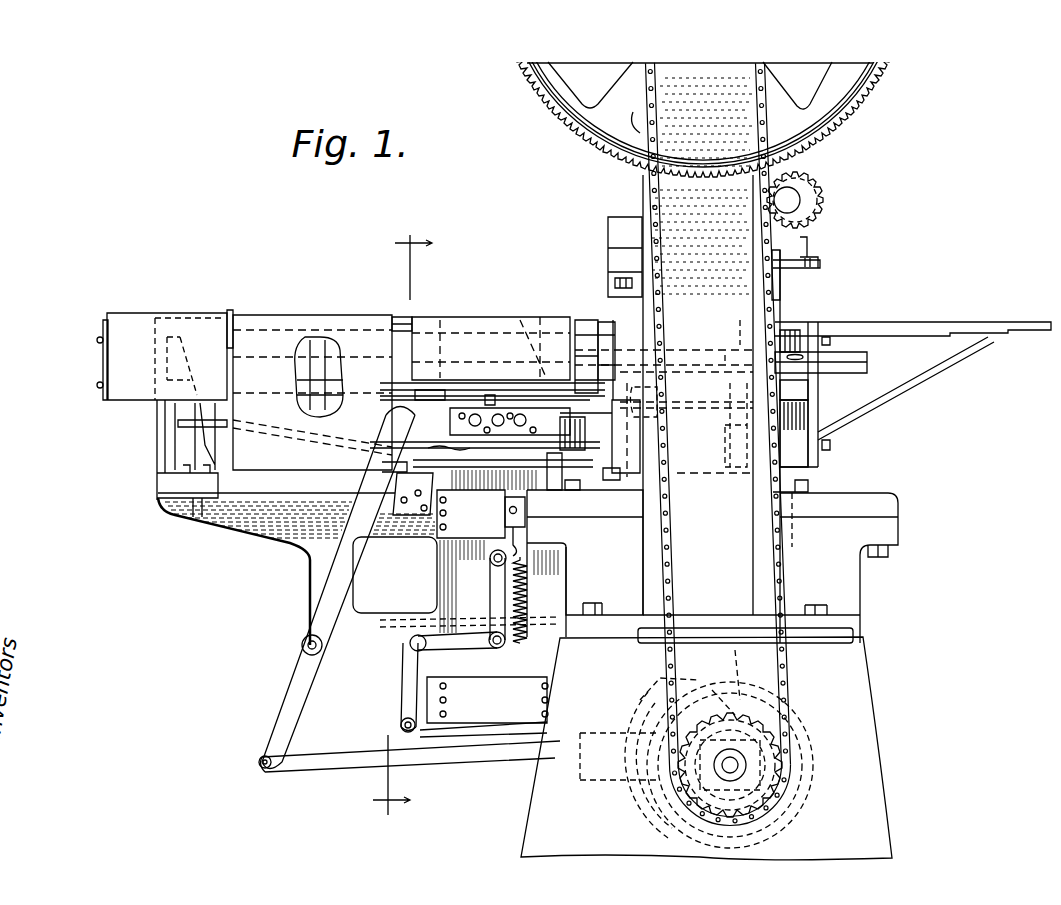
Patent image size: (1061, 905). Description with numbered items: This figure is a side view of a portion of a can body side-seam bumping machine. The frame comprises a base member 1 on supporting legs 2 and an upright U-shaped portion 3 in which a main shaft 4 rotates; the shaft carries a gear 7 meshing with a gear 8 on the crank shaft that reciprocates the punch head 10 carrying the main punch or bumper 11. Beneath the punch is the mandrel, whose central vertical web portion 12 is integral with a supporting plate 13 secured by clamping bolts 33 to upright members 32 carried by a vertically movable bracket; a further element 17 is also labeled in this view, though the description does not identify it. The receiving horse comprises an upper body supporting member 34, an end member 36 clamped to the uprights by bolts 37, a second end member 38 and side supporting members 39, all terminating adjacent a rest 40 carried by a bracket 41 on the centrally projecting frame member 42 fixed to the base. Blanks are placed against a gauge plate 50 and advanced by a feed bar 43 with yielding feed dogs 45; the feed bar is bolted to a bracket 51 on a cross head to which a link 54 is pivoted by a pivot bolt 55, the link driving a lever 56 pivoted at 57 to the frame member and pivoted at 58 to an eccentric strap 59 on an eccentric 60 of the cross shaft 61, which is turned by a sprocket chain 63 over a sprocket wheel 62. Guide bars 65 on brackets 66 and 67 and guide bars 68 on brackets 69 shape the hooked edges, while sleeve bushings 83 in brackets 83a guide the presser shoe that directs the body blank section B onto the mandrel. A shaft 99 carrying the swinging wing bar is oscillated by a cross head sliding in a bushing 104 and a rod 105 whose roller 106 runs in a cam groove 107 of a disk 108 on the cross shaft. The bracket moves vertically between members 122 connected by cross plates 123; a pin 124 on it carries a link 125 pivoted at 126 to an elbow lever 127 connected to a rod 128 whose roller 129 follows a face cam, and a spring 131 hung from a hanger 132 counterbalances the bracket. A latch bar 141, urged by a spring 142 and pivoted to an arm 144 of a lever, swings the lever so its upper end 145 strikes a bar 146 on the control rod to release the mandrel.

The base member 1 is at (845, 583).
The supporting legs 2 is at (636, 738).
The upright U-shaped portion 3 is at (541, 524).
The main shaft 4 is at (790, 200).
The gear 7 is at (808, 187).
The gear 8 is at (703, 107).
The punch head 10 is at (608, 235).
The main punch or bumper 11 is at (615, 286).
The central vertical web portion 12 is at (800, 422).
The supporting plate 13 is at (626, 396).
The shaft 17 is at (800, 395).
The upright members 32 is at (608, 325).
The clamping bolts 33 is at (512, 418).
The upper body supporting member 34 is at (398, 318).
The end member 36 is at (590, 322).
The bolts 37 is at (575, 433).
The second end member 38 is at (310, 373).
The supporting members 39 is at (427, 392).
The rest 40 is at (107, 352).
The bracket 41 is at (172, 440).
The centrally projecting frame member 42 is at (270, 522).
The feed bar 43 is at (830, 357).
The feed dogs 45 is at (805, 360).
The gauge plate 50 is at (229, 311).
The bracket 51 is at (540, 320).
The link 54 is at (470, 318).
The pivot bolt 55 is at (491, 348).
The lever 56 is at (338, 578).
The pivot 57 is at (302, 646).
The pivot 58 is at (259, 762).
The eccentric strap 59 is at (465, 763).
The eccentric 60 is at (652, 702).
The cross shaft 61 is at (742, 762).
The sprocket wheel 62 is at (773, 718).
The sprocket chain 63 is at (784, 548).
The guide bar 65 is at (197, 475).
The bracket 66 is at (193, 433).
The bracket 67 is at (590, 478).
The guide bar 68 is at (400, 483).
The brackets 69 is at (552, 470).
The sleeve bushings 83 is at (726, 342).
The brackets 83a is at (717, 425).
The shaft 99 is at (680, 425).
The bushing 104 is at (812, 487).
The rod 105 is at (780, 640).
The roller 106 is at (724, 700).
The cam groove 107 is at (660, 690).
The disk 108 is at (800, 800).
The members 122 is at (437, 556).
The cross plates 123 is at (471, 513).
The pin 124 is at (490, 560).
The link 125 is at (492, 600).
The pivot 126 is at (471, 653).
The elbow lever 127 is at (403, 690).
The rod 128 is at (500, 812).
The roller 129 is at (795, 765).
The spring 131 is at (528, 575).
The hanger 132 is at (506, 518).
The latch bar 141 is at (415, 462).
The spring 142 is at (455, 452).
The arm 144 is at (400, 425).
The upper end 145 is at (455, 422).
The bar 146 is at (490, 395).
The body blank section B is at (243, 343).